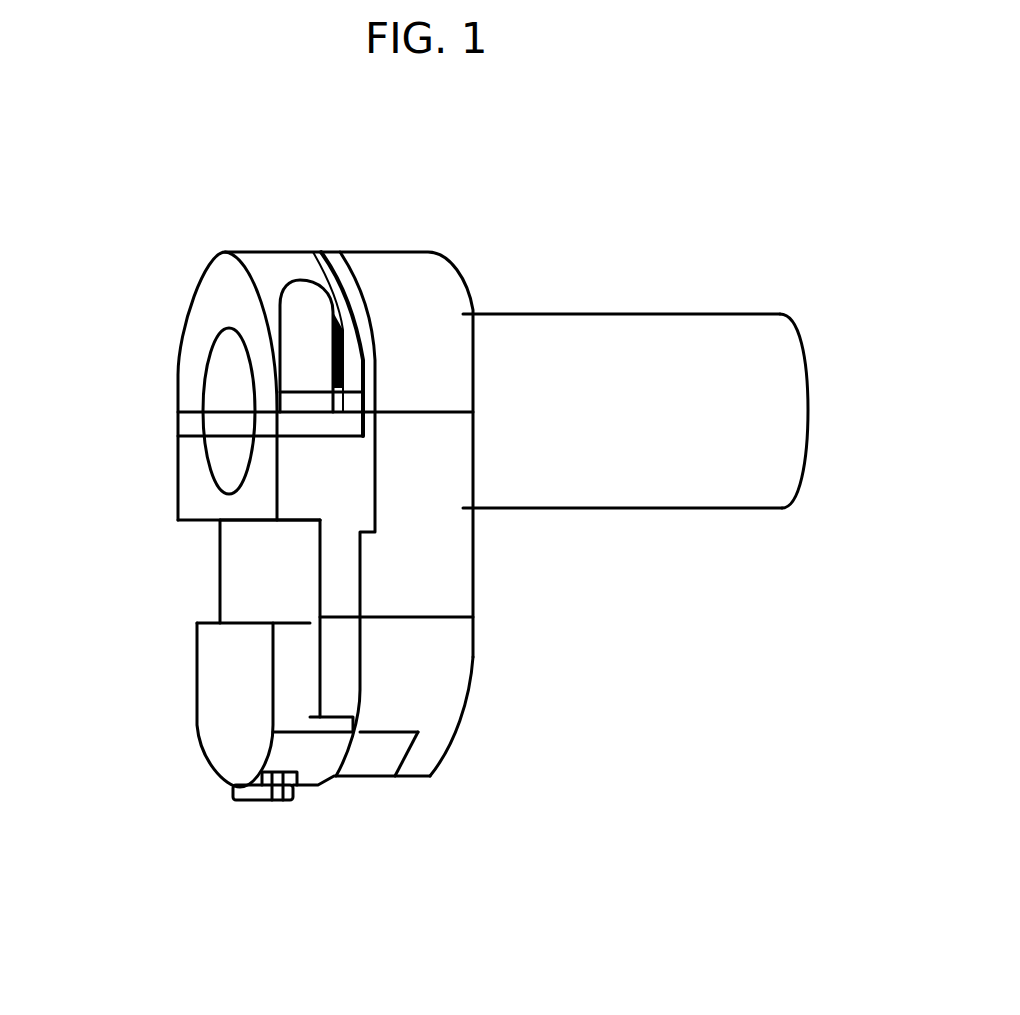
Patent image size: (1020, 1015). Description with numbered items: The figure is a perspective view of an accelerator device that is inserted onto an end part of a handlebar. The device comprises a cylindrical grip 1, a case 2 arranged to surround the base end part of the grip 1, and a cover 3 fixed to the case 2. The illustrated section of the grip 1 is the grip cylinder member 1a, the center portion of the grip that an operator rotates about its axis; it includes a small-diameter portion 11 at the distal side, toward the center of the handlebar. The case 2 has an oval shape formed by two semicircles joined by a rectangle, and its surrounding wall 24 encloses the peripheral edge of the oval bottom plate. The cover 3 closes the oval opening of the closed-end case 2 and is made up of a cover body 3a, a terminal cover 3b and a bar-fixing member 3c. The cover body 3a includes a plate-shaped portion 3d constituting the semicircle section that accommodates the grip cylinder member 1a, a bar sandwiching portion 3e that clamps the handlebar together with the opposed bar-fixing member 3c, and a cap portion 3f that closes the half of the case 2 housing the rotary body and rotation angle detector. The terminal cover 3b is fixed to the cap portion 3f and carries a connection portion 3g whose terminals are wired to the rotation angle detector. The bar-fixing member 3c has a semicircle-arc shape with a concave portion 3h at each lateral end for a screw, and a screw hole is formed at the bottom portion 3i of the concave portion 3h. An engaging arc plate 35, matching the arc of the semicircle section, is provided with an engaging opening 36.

The grip 1 is at (622, 354).
The grip cylinder member 1a is at (636, 378).
The small-diameter portion 11 is at (725, 487).
The case 2 is at (414, 272).
The surrounding wall 24 is at (452, 663).
The cover 3 is at (248, 550).
The cover body 3a is at (245, 593).
The terminal cover 3b is at (227, 718).
The bar-fixing member 3c is at (225, 293).
The plate-shaped portion 3d is at (354, 290).
The bar sandwiching portion 3e is at (190, 459).
The cap portion 3f is at (338, 693).
The connection portion 3g is at (250, 800).
The concave portion 3h is at (302, 303).
The bottom portion 3i is at (337, 402).
The engaging arc plate 35 is at (397, 778).
The engaging opening 36 is at (347, 783).